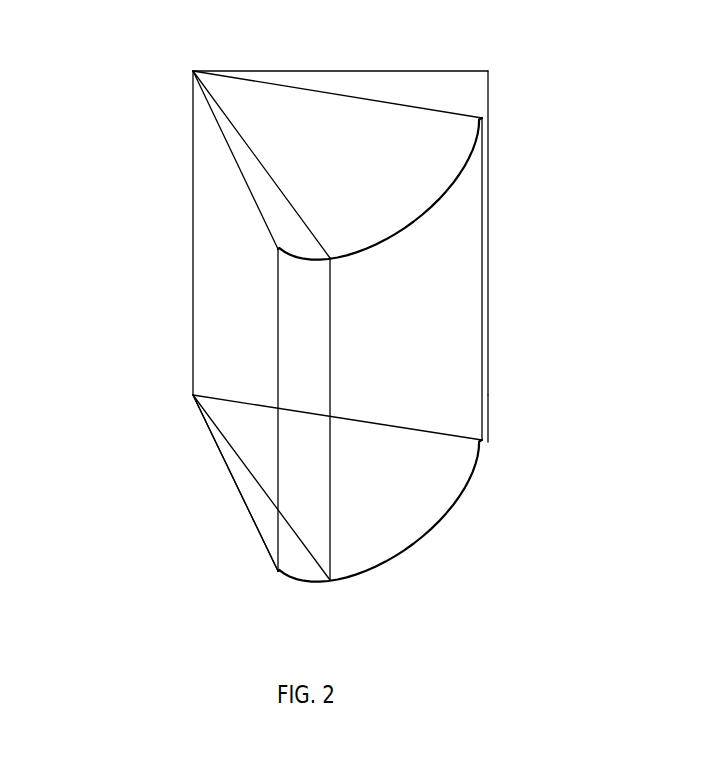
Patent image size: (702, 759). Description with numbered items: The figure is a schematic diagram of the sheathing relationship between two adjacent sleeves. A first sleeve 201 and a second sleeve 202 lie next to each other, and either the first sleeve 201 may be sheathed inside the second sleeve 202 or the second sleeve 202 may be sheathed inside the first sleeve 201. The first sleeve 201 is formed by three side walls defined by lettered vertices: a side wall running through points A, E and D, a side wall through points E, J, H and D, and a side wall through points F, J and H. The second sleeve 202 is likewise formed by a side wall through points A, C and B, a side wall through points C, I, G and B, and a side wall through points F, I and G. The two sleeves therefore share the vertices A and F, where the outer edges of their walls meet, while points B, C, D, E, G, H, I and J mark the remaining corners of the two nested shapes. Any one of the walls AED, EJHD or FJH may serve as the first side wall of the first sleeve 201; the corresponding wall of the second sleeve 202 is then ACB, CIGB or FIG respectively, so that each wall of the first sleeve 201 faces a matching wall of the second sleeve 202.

The first sleeve 201 is at (268, 228).
The second sleeve 202 is at (445, 71).
The vertex A is at (179, 219).
The vertex B is at (501, 226).
The vertex C is at (269, 325).
The vertex D is at (337, 255).
The vertex E is at (263, 410).
The vertex F is at (222, 481).
The vertex G is at (502, 409).
The vertex H is at (350, 436).
The vertex I is at (266, 510).
The vertex J is at (235, 497).